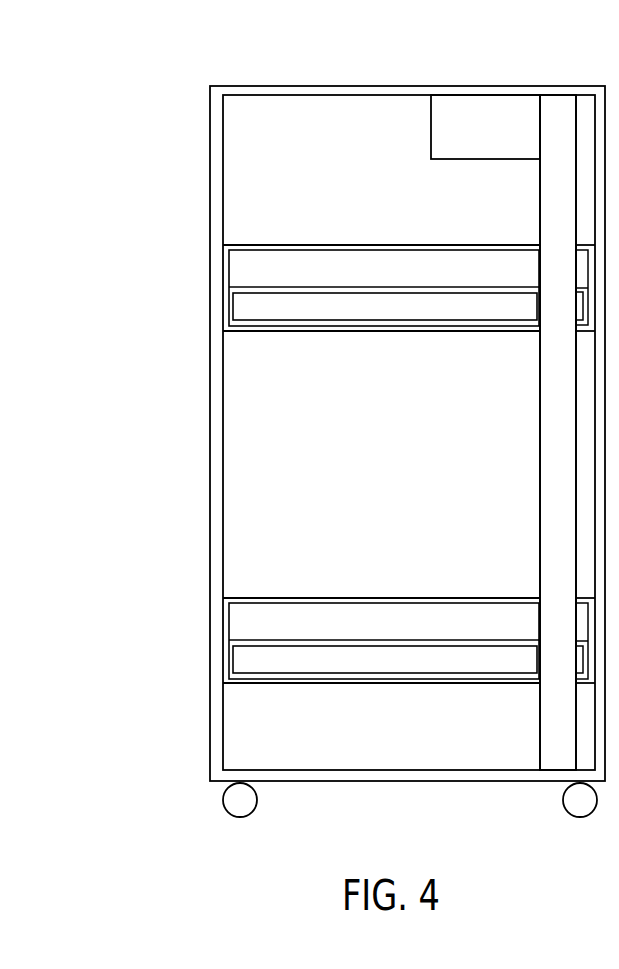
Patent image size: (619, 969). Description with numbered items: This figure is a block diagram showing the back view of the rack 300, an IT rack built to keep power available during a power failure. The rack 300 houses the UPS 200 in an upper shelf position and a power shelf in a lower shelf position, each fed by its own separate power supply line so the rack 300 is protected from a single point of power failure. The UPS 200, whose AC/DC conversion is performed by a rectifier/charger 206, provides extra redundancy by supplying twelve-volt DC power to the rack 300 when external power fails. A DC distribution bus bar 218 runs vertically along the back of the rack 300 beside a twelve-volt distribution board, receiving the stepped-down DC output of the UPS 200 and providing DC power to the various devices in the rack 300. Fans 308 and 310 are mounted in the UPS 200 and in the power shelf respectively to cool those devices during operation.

The rack 300 is at (390, 67).
The UPS 200 is at (384, 315).
The rectifier/charger 206 is at (384, 666).
The fan 308 is at (275, 313).
The fan 310 is at (268, 655).
The DC distribution bus bar 218 is at (539, 460).